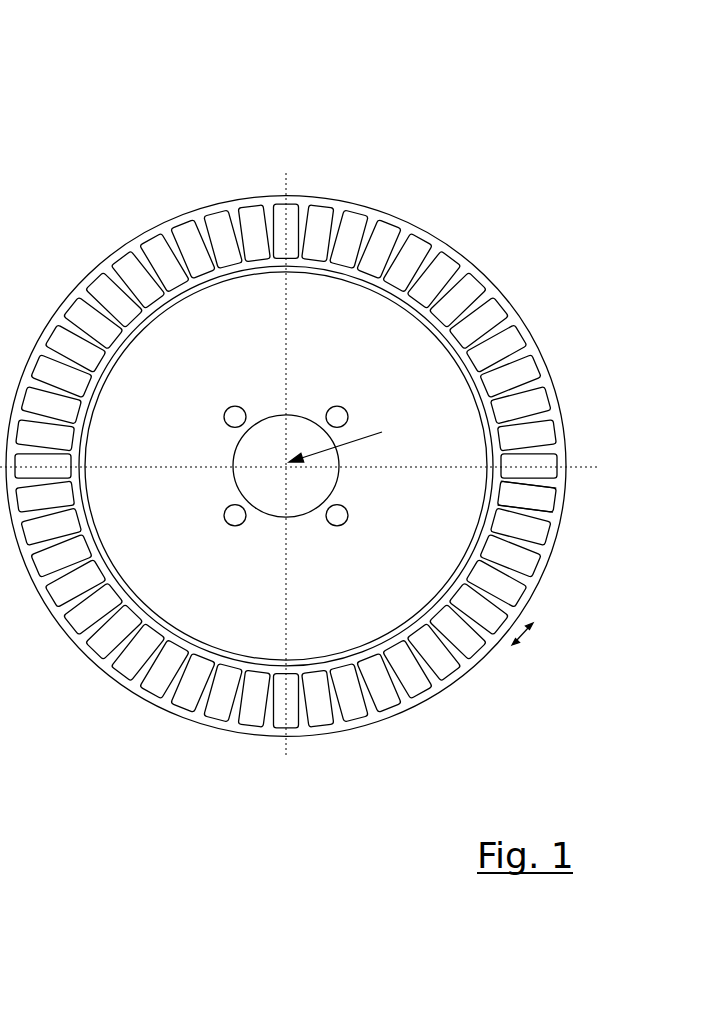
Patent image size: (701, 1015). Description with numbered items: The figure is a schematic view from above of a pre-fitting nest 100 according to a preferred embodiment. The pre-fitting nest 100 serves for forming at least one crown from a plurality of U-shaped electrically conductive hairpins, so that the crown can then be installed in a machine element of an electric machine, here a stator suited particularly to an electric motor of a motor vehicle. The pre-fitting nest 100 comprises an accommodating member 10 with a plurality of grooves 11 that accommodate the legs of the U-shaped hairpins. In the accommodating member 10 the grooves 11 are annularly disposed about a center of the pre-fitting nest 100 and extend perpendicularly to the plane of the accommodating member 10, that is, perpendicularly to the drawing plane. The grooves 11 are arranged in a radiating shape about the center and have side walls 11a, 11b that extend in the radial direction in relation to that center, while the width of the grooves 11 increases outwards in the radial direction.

The pre-fitting nest 100 is at (71, 38).
The accommodating member 10 is at (313, 203).
The grooves 11 is at (467, 287).
The side wall 11a is at (535, 499).
The side wall 11b is at (521, 491).